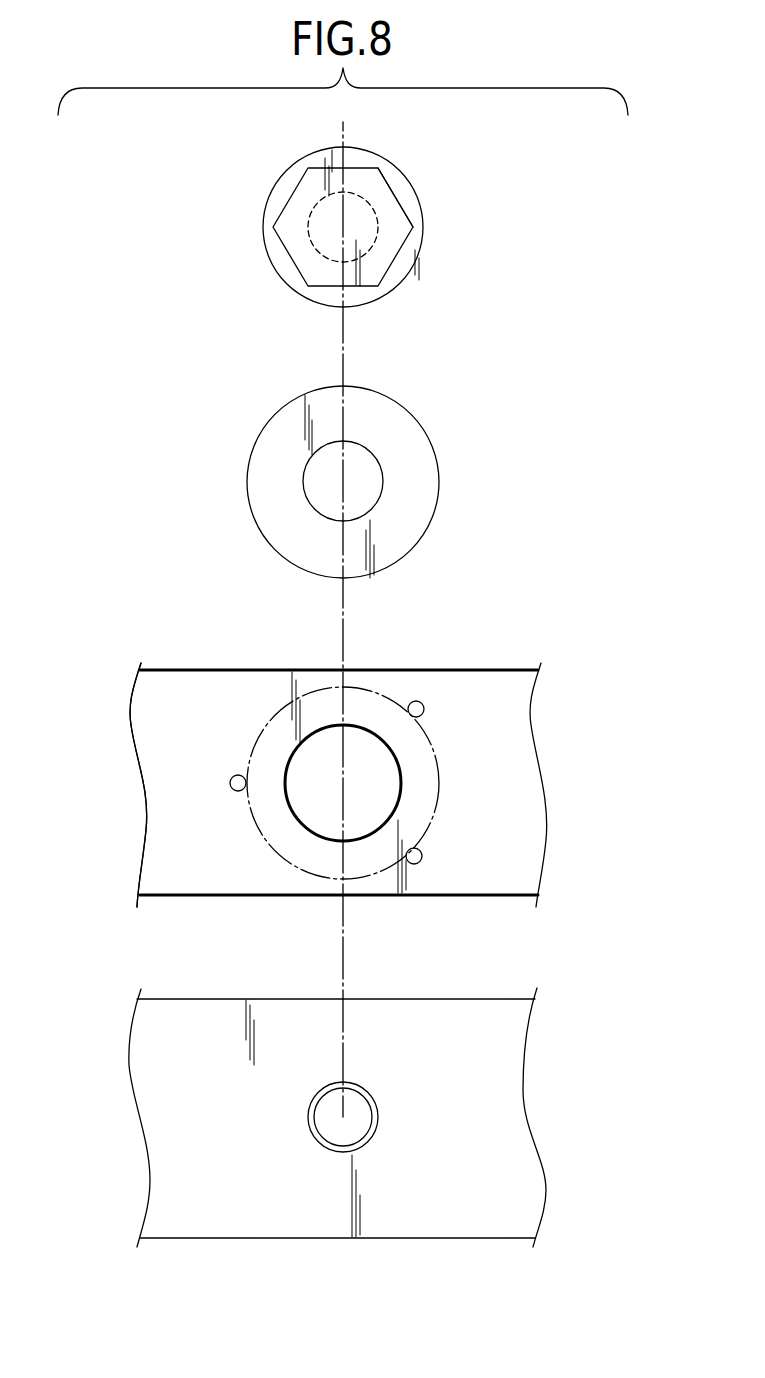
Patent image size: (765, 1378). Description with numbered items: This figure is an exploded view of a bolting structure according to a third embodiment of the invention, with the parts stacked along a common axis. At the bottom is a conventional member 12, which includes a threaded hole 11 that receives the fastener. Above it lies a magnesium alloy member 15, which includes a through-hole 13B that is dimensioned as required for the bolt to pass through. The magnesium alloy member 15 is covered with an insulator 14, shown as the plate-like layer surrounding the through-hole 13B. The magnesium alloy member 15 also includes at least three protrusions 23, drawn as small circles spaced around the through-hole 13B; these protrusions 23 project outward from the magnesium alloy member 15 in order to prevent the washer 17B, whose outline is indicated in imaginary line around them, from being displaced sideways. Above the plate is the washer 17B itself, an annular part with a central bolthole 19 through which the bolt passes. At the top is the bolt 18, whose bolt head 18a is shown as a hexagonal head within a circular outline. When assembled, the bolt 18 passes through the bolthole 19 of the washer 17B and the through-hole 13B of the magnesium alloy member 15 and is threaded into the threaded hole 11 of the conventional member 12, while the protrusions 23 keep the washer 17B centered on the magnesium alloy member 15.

The bolt 18 is at (273, 235).
The bolt head 18a is at (391, 193).
The washer 17B is at (248, 468).
The bolthole 19 is at (368, 501).
The insulator 14 is at (212, 668).
The magnesium alloy member 15 is at (137, 758).
The through-hole 13B is at (300, 814).
The protrusions 23 is at (230, 784).
The conventional member 12 is at (131, 1075).
The threaded hole 11 is at (361, 1138).